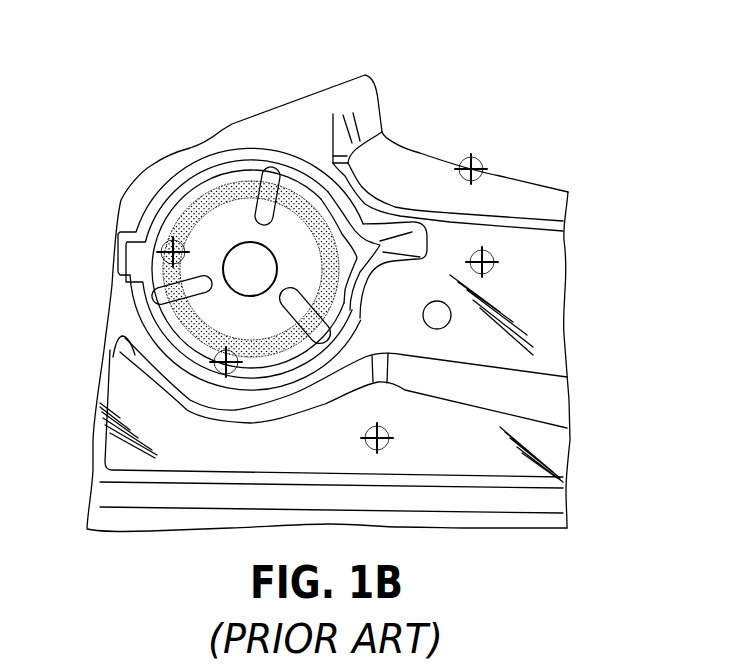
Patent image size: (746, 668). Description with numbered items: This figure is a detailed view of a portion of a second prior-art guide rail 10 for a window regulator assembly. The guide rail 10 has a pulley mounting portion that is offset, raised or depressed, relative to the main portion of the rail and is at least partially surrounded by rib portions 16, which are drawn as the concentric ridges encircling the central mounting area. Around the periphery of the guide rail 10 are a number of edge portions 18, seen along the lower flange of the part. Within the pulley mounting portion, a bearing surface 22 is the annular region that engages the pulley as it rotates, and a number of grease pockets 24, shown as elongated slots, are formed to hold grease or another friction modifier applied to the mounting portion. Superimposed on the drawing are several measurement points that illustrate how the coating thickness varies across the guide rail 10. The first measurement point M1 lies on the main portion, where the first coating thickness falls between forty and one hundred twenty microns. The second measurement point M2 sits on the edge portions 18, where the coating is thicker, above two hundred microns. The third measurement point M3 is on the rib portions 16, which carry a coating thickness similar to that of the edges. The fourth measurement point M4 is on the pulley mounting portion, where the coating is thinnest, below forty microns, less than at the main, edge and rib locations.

The guide rail 10 is at (138, 111).
The rib portions 16 is at (190, 338).
The edge portions 18 is at (143, 480).
The bearing surface 22 is at (183, 213).
The grease pockets 24 is at (273, 176).
The first measurement point M1 is at (489, 271).
The second measurement point M2 is at (479, 159).
The third measurement point M3 is at (231, 373).
The fourth measurement point M4 is at (162, 244).